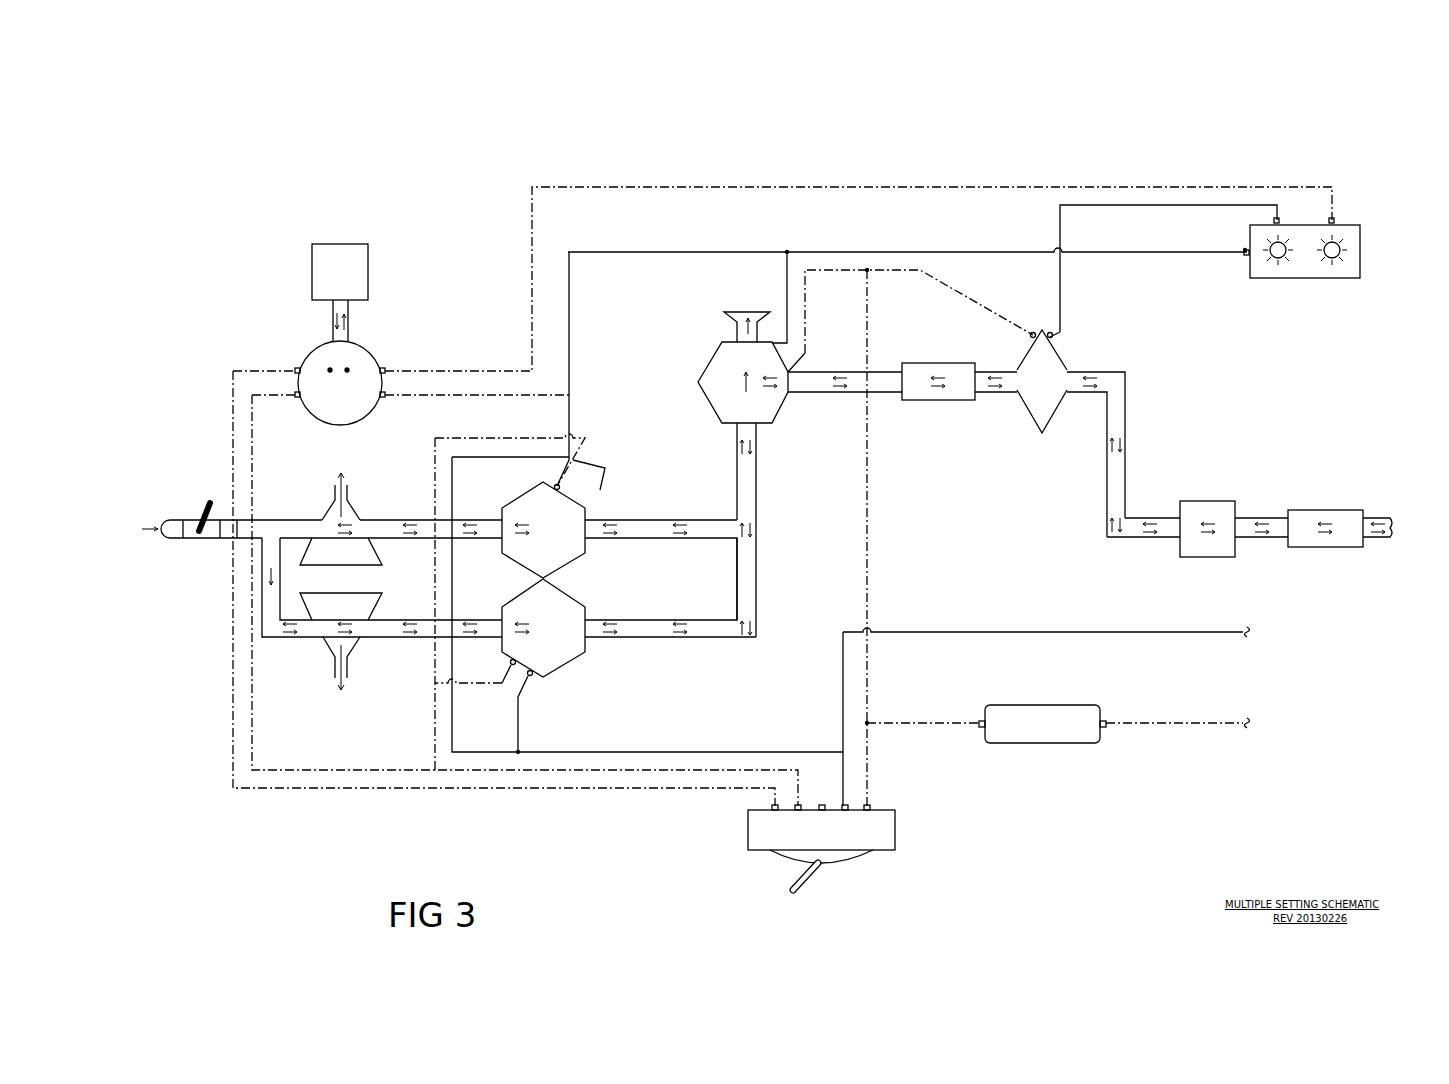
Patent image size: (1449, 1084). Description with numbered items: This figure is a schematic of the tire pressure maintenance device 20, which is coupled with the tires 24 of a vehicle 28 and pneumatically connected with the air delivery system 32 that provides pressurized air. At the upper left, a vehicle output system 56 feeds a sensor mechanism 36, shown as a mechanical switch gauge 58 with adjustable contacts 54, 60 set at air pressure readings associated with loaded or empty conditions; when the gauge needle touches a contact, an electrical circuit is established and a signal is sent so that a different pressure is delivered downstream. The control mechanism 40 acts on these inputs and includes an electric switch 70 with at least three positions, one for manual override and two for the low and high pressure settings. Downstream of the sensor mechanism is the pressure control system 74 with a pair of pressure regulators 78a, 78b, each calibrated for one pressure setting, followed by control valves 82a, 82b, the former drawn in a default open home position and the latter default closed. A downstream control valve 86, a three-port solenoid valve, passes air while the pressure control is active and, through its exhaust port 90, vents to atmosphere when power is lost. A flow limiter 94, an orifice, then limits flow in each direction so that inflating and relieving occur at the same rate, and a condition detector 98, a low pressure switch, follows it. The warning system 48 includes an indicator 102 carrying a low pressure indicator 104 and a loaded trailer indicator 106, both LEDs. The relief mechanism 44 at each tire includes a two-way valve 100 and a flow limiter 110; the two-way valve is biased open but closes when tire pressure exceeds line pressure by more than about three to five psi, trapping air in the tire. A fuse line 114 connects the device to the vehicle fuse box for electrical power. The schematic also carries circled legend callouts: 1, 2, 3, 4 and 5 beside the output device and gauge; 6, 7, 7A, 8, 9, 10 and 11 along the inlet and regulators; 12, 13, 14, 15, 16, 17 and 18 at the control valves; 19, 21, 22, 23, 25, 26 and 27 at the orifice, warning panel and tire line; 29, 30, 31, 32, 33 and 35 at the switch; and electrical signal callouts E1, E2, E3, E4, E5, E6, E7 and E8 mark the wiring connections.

The sensor mechanism 36 is at (388, 163).
The vehicle output system 56 is at (351, 258).
The mechanical switch gauge 58 is at (340, 383).
The sensor setting A 54 is at (275, 335).
The adjustable contact 60 is at (413, 330).
The control mechanism 40 is at (190, 325).
The pressure control system 74 is at (222, 678).
The pressure regulator 78a is at (350, 513).
The pressure regulator 78b is at (368, 592).
The control valve 82a is at (560, 491).
The control valve 82b is at (551, 596).
The downstream control valve 86 is at (768, 408).
The exhaust port 90 is at (752, 328).
The flow limiter 94 is at (918, 373).
The condition detector 98 is at (1040, 403).
The relief mechanism 44 is at (1083, 283).
The warning system 48 is at (1302, 230).
The indicator 102 is at (1372, 265).
The low pressure indicator 104 is at (1273, 250).
The loaded trailer indicator 106 is at (1342, 245).
The two-way valve 100 is at (1210, 512).
The flow limiter 110 is at (1328, 512).
The fuse line 114 is at (1083, 728).
The electric switch 70 is at (783, 837).
The vehicle output device 1 is at (333, 243).
The sensor setting A 2 is at (329, 369).
The sensor setting B 3 is at (348, 369).
The sensor 4 is at (360, 343).
The vehicle output 5 is at (330, 322).
The manual system shut-off valve 6 is at (207, 500).
The pressurized air 7 is at (236, 520).
The pressure control A 7A is at (299, 558).
The unregulated air 8 is at (261, 590).
The pressure control B 9 is at (304, 609).
The air pressure A 10 is at (307, 519).
The air pressure B 11 is at (409, 639).
The control valve A 12 is at (591, 553).
The control valve B 13 is at (589, 602).
The air pressure A 14 is at (638, 518).
The air pressure B 15 is at (646, 639).
The control valve C 16 is at (717, 345).
The exhaust port 17 is at (720, 312).
The air pressure to tires 18 is at (875, 394).
The orifice A 19 is at (961, 401).
The tire pressure maintenance device 20 is at (1066, 362).
The warning light panel 21 is at (1308, 280).
The air pressure to tires 22 is at (1118, 372).
The 2 way valve 23 is at (1188, 499).
The tire 24 is at (1318, 509).
The warning light A 25 is at (1266, 258).
The warning light B 26 is at (1333, 260).
The air pressure to tires 27 is at (1373, 539).
The vehicle 28 is at (1013, 744).
The 3 way switch 29 is at (897, 831).
The 1st position on 3 way switch 30 is at (773, 814).
The 2nd position on 3 way switch 31 is at (797, 814).
The air delivery system 32 is at (823, 812).
The on/off switch 33 is at (824, 871).
The adjoining air flow 35 is at (758, 548).
The (-) from ABS ground E1 is at (571, 362).
The (+) from ABS E2 is at (869, 595).
The loaded trailer signal E3 is at (530, 225).
The empty trailer signal E4 is at (231, 385).
The auto positive signal for sensor control E5 is at (254, 441).
The manual positive signals for electric valves E6 is at (531, 769).
The auxiliary positive signal from switch E7 is at (822, 805).
The positive low pressure signal E8 is at (1058, 238).